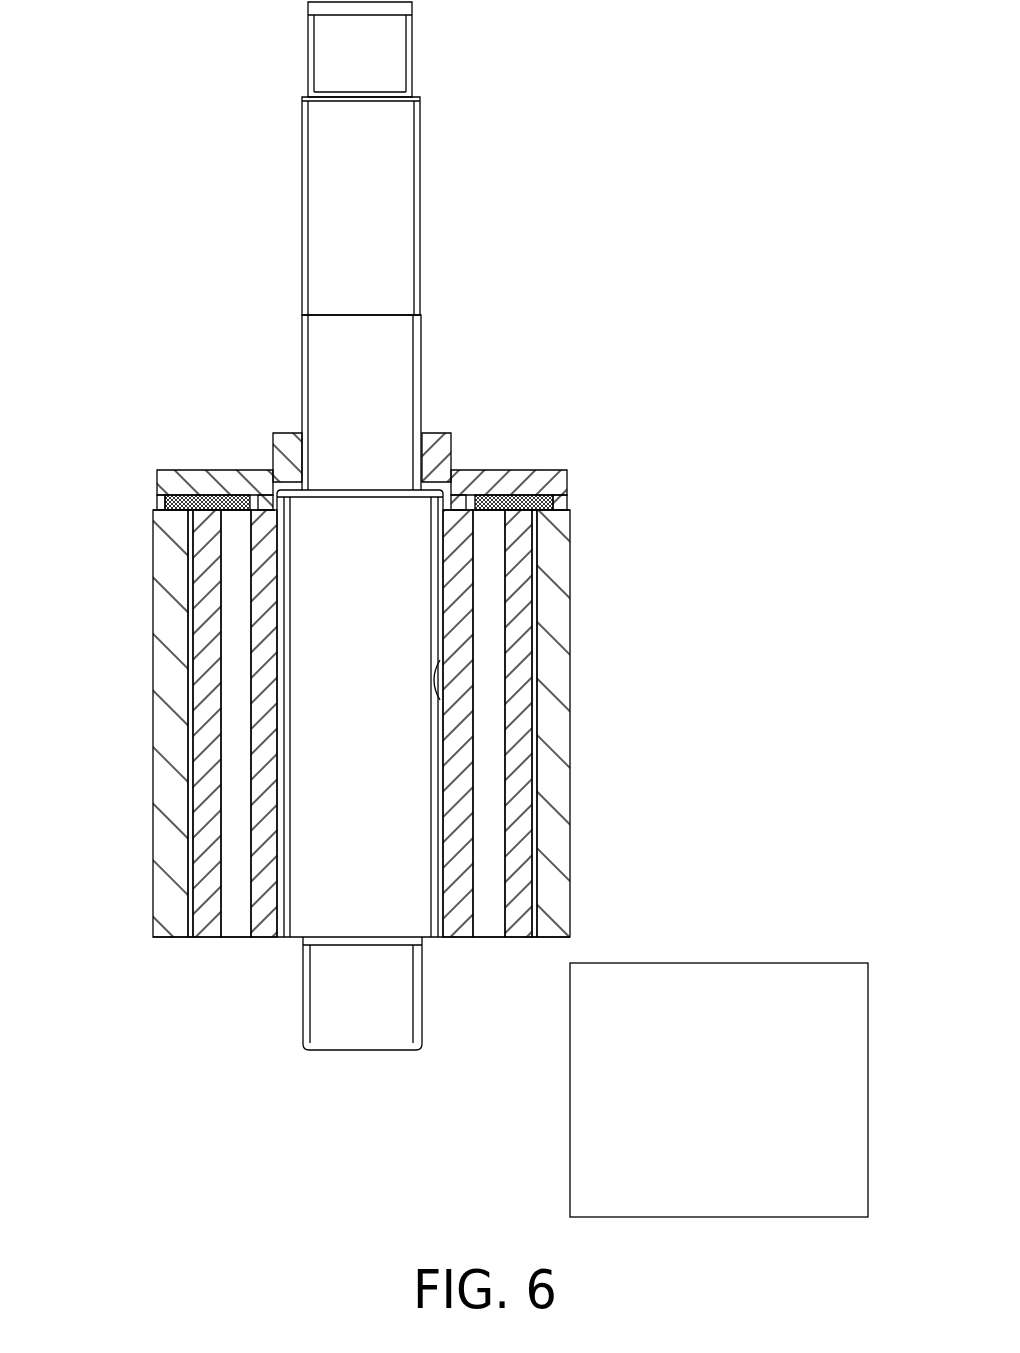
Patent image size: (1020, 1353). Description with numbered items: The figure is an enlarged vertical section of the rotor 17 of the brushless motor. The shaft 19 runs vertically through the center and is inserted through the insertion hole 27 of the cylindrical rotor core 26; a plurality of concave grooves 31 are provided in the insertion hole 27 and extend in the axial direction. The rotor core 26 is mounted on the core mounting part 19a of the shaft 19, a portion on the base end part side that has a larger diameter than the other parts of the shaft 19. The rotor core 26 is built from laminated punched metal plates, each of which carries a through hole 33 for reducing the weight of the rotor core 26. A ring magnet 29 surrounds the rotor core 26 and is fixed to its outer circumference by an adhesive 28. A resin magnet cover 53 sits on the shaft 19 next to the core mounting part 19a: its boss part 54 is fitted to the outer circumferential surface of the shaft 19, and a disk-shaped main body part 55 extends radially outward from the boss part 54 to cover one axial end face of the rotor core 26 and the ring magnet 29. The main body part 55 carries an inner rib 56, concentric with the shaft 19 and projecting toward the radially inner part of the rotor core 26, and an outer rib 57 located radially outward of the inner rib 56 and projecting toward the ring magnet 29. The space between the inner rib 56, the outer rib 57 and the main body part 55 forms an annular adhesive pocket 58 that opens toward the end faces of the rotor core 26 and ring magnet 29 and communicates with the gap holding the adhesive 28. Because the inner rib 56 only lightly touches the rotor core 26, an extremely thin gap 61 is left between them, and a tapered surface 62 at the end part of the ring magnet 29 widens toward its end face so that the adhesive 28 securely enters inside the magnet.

The rotor 17 is at (532, 228).
The shaft 19 is at (390, 148).
The core mounting part 19a is at (390, 785).
The rotor core 26 is at (520, 730).
The insertion hole 27 is at (440, 670).
The adhesive 28 is at (535, 615).
The ring magnet 29 is at (553, 575).
The concave groove 31 is at (265, 765).
The through hole 33 is at (240, 700).
The magnet cover 53 is at (510, 485).
The boss part 54 is at (288, 433).
The main body part 55 is at (185, 470).
The inner rib 56 is at (447, 470).
The outer rib 57 is at (565, 497).
The adhesive pocket 58 is at (175, 512).
The gap 61 is at (262, 497).
The tapered surface 62 is at (547, 512).